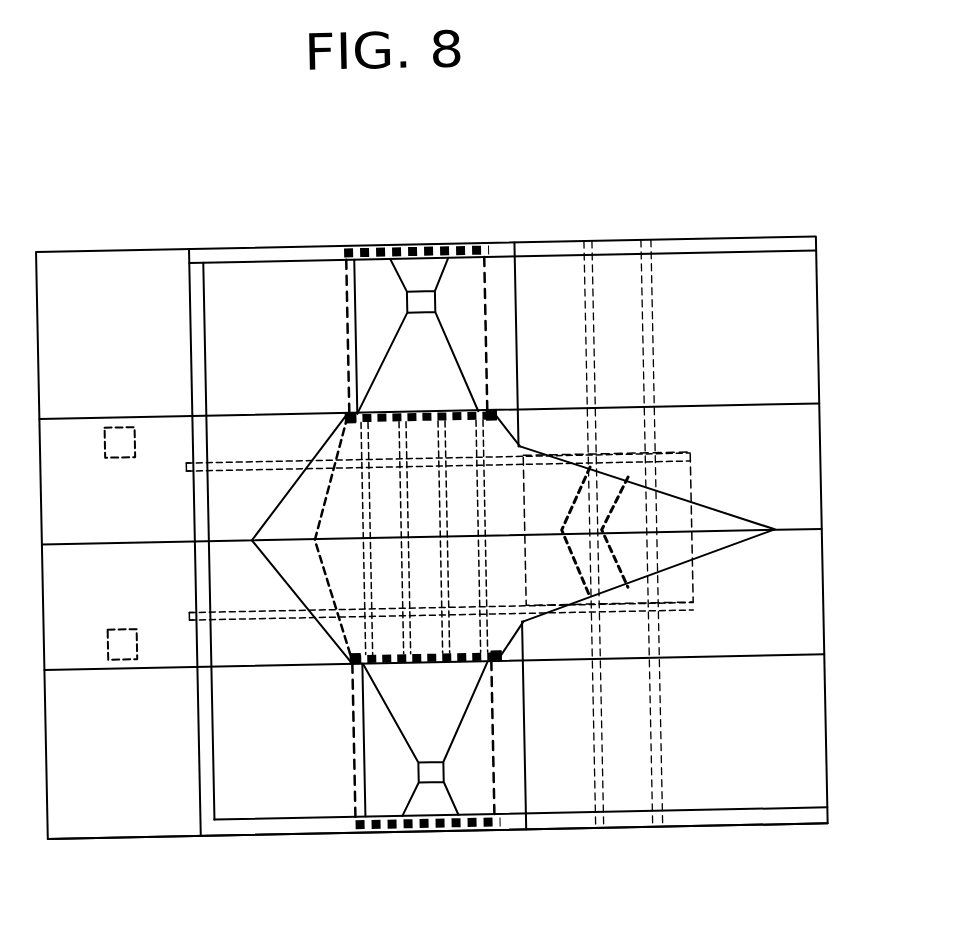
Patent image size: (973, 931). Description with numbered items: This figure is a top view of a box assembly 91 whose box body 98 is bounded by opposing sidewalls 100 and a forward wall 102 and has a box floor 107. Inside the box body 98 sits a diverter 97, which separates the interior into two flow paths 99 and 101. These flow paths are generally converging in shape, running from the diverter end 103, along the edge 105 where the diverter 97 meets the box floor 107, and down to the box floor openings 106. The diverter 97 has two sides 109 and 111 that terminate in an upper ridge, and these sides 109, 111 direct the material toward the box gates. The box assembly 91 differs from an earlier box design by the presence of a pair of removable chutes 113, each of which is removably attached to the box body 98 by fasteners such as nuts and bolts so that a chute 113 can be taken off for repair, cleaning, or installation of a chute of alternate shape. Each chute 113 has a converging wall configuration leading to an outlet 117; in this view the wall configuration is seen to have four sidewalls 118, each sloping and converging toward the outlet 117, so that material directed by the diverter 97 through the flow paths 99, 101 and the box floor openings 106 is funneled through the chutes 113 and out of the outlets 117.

The box assembly 91 is at (837, 325).
The diverter 97 is at (704, 557).
The box body 98 is at (722, 834).
The flow path 99 is at (541, 284).
The opposing sidewalls 100 is at (305, 248).
The flow path 101 is at (527, 794).
The forward wall 102 is at (196, 772).
The diverter end 103 is at (769, 544).
The edge 105 is at (539, 454).
The box floor openings 106 is at (349, 301).
The box floor 107 is at (570, 349).
The diverter side 109 is at (415, 505).
The diverter side 111 is at (414, 575).
The removable chute 113 is at (284, 532).
The outlet 117 is at (427, 770).
The sidewalls 118 is at (396, 680).